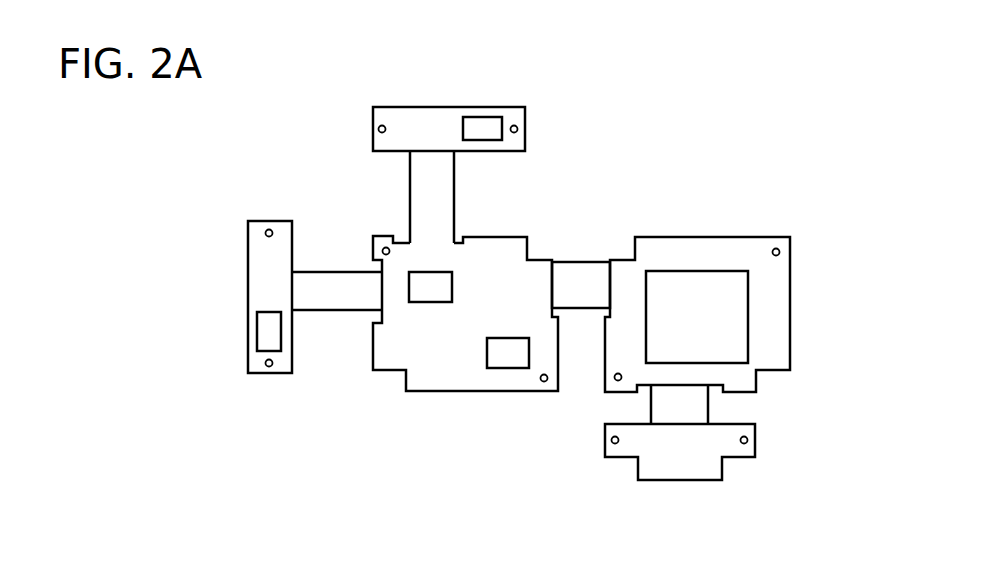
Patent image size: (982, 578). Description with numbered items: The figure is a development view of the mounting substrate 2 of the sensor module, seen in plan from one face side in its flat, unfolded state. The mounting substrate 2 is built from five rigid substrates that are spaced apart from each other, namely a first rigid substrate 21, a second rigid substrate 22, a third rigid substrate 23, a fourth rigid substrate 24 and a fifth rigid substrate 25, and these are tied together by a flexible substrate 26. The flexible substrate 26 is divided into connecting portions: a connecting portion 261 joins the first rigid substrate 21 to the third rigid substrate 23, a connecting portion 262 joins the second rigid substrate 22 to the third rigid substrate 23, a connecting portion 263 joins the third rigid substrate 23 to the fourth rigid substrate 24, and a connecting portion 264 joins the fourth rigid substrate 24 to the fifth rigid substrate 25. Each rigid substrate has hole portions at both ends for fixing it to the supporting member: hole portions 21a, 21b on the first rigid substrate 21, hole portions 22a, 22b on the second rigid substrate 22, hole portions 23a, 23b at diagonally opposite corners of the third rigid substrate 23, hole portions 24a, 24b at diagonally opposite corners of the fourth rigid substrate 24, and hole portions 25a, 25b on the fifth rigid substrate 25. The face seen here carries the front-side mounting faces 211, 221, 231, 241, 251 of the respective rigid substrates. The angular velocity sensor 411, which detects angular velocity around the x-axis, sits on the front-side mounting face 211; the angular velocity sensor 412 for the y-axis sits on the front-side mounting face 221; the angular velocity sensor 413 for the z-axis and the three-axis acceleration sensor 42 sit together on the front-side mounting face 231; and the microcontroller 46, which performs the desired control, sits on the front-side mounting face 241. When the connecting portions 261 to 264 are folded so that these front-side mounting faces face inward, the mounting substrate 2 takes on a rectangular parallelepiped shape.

The mounting substrate 2 is at (731, 118).
The first rigid substrate 21 is at (446, 98).
The front-side mounting face 211 is at (408, 118).
The hole portion 21a is at (378, 129).
The hole portion 21b is at (518, 129).
The angular velocity sensor 411 is at (485, 127).
The second rigid substrate 22 is at (240, 247).
The front-side mounting face 221 is at (256, 281).
The hole portion 22a is at (269, 367).
The hole portion 22b is at (269, 229).
The angular velocity sensor 412 is at (264, 335).
The third rigid substrate 23 is at (381, 380).
The front-side mounting face 231 is at (508, 373).
The hole portion 23a is at (545, 385).
The hole portion 23b is at (386, 247).
The angular velocity sensor 413 is at (432, 292).
The acceleration sensor 42 is at (507, 348).
The fourth rigid substrate 24 is at (748, 228).
The front-side mounting face 241 is at (778, 322).
The hole portion 24a is at (620, 383).
The hole portion 24b is at (780, 252).
The microcontroller 46 is at (695, 290).
The fifth rigid substrate 25 is at (740, 466).
The front-side mounting face 251 is at (687, 470).
The hole portion 25a is at (611, 441).
The hole portion 25b is at (748, 440).
The flexible substrate 26 is at (589, 255).
The connecting portion 261 is at (447, 173).
The connecting portion 262 is at (326, 283).
The connecting portion 263 is at (583, 298).
The connecting portion 264 is at (698, 408).